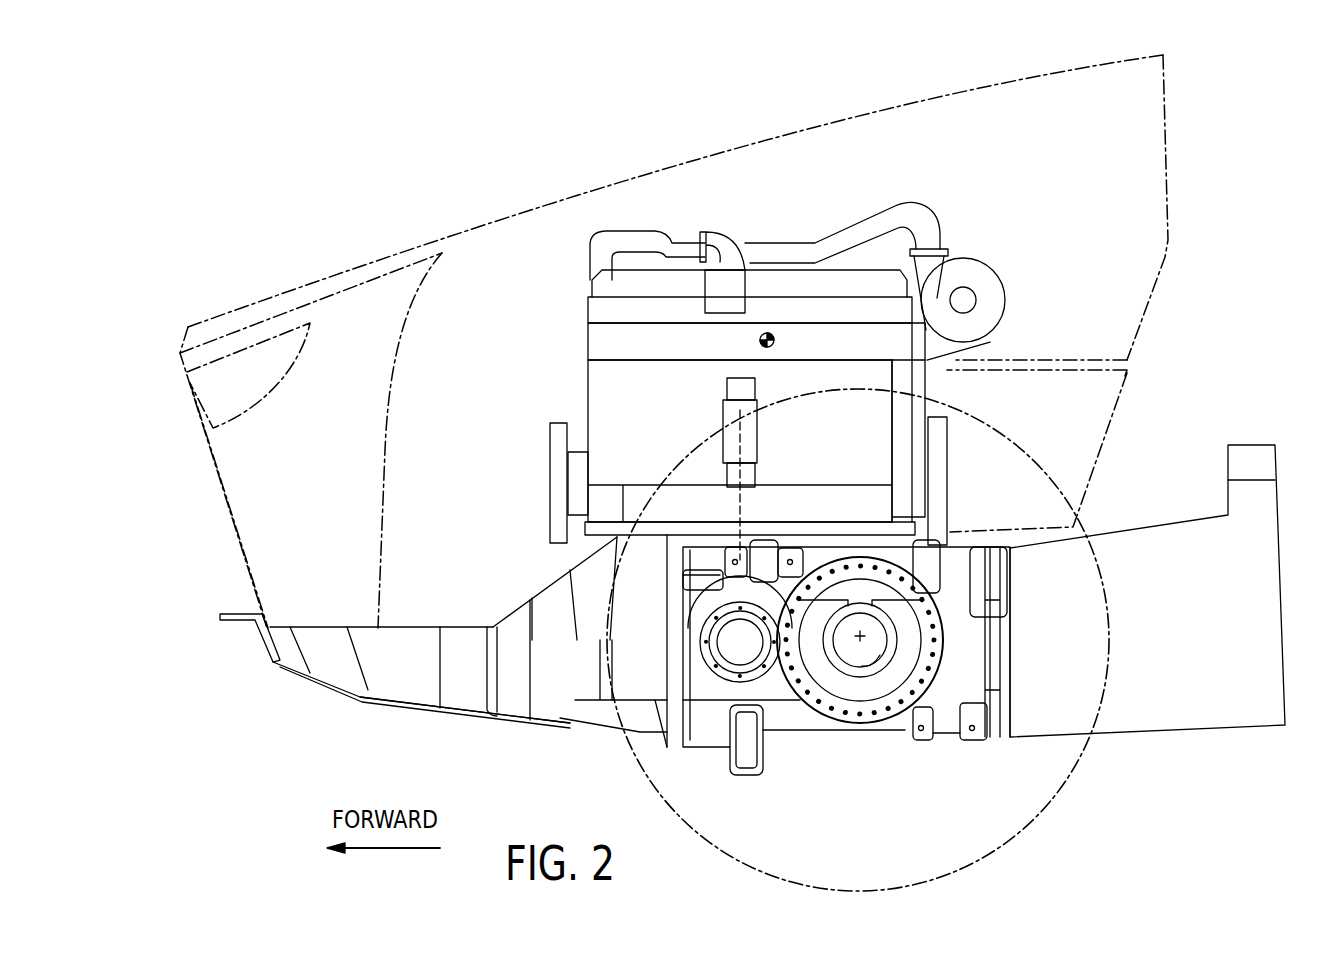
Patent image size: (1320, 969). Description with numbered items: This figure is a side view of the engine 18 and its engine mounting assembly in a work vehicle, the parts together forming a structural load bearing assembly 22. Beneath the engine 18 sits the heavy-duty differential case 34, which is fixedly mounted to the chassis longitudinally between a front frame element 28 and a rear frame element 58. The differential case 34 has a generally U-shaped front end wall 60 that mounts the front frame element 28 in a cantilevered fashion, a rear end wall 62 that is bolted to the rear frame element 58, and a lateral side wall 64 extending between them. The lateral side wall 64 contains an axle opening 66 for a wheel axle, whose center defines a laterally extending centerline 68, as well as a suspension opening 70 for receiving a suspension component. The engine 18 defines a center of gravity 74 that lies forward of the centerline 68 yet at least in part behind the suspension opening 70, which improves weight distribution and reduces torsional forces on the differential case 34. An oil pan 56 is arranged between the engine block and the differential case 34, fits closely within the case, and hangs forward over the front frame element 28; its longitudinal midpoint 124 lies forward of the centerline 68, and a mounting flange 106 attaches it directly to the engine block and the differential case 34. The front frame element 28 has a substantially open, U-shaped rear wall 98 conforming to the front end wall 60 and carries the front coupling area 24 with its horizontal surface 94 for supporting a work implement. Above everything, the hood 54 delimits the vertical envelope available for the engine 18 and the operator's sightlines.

The engine 18 is at (545, 342).
The structural load bearing assembly 22 is at (478, 605).
The front coupling area 24 is at (248, 642).
The front frame element 28 is at (360, 710).
The differential case 34 is at (790, 740).
The hood 54 is at (770, 140).
The oil pan 56 is at (627, 572).
The rear frame element 58 is at (1118, 742).
The front end wall 60 is at (670, 650).
The rear end wall 62 is at (1010, 672).
The lateral side wall 64 is at (950, 687).
The axle opening 66 is at (868, 662).
The centerline 68 is at (858, 637).
The suspension opening 70 is at (760, 652).
The center of gravity 74 is at (771, 334).
The horizontal surface 94 is at (240, 612).
The rear wall 98 is at (667, 660).
The mounting flange 106 is at (585, 528).
The longitudinal midpoint 124 is at (643, 548).